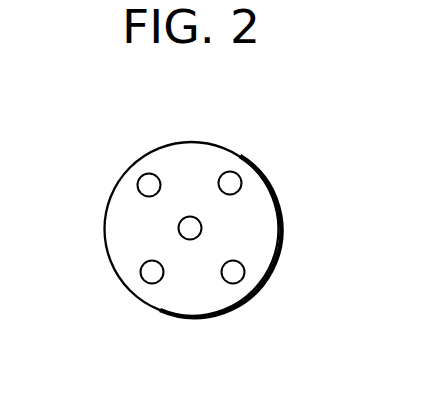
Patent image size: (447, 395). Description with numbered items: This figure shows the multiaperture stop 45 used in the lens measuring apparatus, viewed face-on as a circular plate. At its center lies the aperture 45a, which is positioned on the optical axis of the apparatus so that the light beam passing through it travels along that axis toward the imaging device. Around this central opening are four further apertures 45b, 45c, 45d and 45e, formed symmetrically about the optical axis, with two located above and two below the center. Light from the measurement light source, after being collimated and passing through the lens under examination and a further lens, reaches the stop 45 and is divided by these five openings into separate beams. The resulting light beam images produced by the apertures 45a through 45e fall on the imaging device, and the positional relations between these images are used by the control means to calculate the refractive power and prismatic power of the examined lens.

The multiaperture stop 45 is at (190, 141).
The aperture 45a is at (195, 230).
The aperture 45b is at (243, 277).
The aperture 45c is at (143, 276).
The aperture 45d is at (143, 182).
The aperture 45e is at (233, 181).